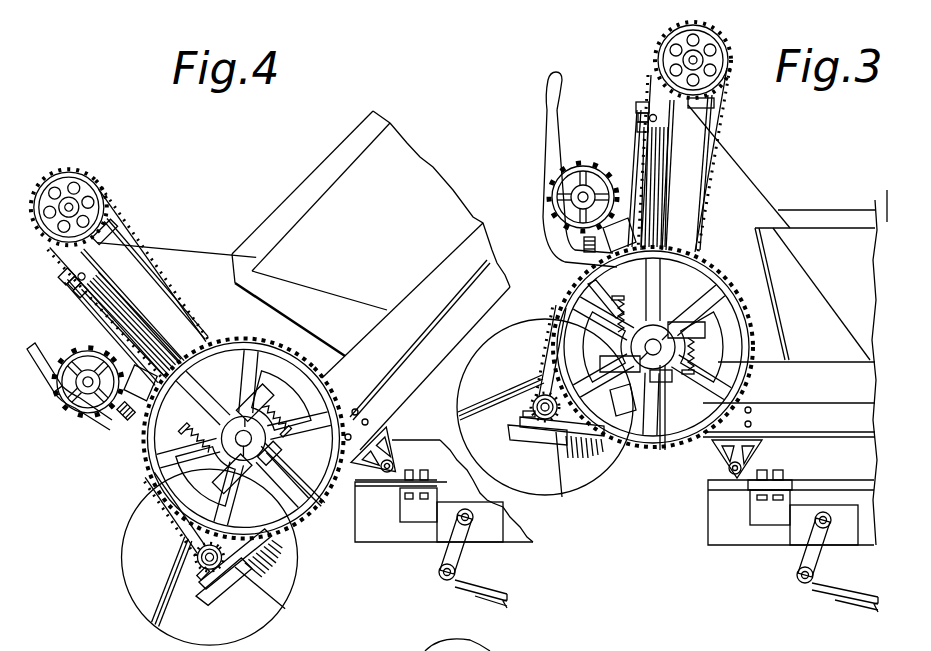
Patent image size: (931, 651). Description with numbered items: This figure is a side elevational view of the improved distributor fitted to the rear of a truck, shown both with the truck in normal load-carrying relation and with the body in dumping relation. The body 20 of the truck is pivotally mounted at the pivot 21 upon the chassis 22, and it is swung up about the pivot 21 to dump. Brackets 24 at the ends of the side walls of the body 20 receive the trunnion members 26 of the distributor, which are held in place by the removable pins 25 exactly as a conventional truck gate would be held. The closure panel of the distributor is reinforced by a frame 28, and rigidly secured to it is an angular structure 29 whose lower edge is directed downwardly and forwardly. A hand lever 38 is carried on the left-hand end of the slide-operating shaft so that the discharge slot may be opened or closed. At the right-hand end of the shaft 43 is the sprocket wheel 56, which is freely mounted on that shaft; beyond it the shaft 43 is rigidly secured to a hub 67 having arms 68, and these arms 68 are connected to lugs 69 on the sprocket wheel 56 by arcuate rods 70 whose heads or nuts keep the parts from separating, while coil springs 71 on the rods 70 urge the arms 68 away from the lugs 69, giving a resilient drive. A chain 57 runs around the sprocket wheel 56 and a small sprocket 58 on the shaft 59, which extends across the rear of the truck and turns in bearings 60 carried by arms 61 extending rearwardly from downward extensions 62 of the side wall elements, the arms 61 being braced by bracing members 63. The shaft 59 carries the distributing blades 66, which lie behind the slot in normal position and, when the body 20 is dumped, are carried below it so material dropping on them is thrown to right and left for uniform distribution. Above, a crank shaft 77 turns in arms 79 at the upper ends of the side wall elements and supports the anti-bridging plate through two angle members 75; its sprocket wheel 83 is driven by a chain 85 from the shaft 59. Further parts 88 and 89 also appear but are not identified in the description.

In FIG. 3, the body 20 is at (830, 210).
In FIG. 4, the body 20 is at (352, 172).
In FIG. 3, the pivot 21 is at (722, 460).
In FIG. 4, the pivot 21 is at (395, 460).
In FIG. 3, the chassis 22 is at (740, 545).
In FIG. 4, the chassis 22 is at (400, 545).
In FIG. 3, the bracket 24 is at (638, 116).
In FIG. 4, the bracket 24 is at (72, 292).
In FIG. 3, the removable pin 25 is at (640, 102).
In FIG. 4, the removable pin 25 is at (62, 268).
In FIG. 3, the trunnion member 26 is at (649, 118).
In FIG. 4, the trunnion member 26 is at (65, 281).
In FIG. 3, the frame 28 is at (636, 150).
In FIG. 4, the frame 28 is at (98, 325).
In FIG. 3, the angular structure 29 is at (596, 296).
In FIG. 3, the hand lever 38 is at (550, 124).
In FIG. 4, the hand lever 38 is at (44, 380).
In FIG. 3, the shaft 43 is at (695, 285).
In FIG. 4, the shaft 43 is at (285, 445).
In FIG. 3, the sprocket wheel 56 is at (748, 372).
In FIG. 4, the sprocket wheel 56 is at (238, 338).
In FIG. 3, the chain 57 is at (605, 470).
In FIG. 4, the chain 57 is at (290, 545).
In FIG. 3, the small sprocket 58 is at (540, 372).
In FIG. 4, the small sprocket 58 is at (175, 545).
In FIG. 3, the shaft 59 is at (532, 407).
In FIG. 4, the shaft 59 is at (192, 575).
In FIG. 3, the bearing 60 is at (520, 422).
In FIG. 4, the bearing 60 is at (200, 578).
In FIG. 3, the arm 61 is at (520, 440).
In FIG. 4, the arm 61 is at (212, 590).
In FIG. 3, the downward extension 62 is at (663, 445).
In FIG. 4, the downward extension 62 is at (270, 500).
In FIG. 3, the bracing member 63 is at (623, 400).
In FIG. 3, the distributing blade 66 is at (570, 494).
In FIG. 4, the distributing blade 66 is at (282, 603).
In FIG. 3, the hub 67 is at (665, 376).
In FIG. 4, the hub 67 is at (255, 455).
In FIG. 3, the arm 68 is at (714, 292).
In FIG. 4, the arm 68 is at (298, 362).
In FIG. 3, the lug 69 is at (586, 320).
In FIG. 4, the lug 69 is at (190, 448).
In FIG. 3, the arcuate rod 70 is at (612, 332).
In FIG. 4, the arcuate rod 70 is at (270, 400).
In FIG. 3, the coil spring 71 is at (600, 338).
In FIG. 4, the coil spring 71 is at (275, 410).
In FIG. 3, the angle member 75 is at (720, 120).
In FIG. 4, the angle member 75 is at (133, 215).
In FIG. 3, the shaft 77 is at (688, 58).
In FIG. 4, the shaft 77 is at (75, 205).
In FIG. 3, the arm 79 is at (684, 108).
In FIG. 4, the arm 79 is at (100, 245).
In FIG. 3, the sprocket wheel 83 is at (728, 40).
In FIG. 4, the sprocket wheel 83 is at (58, 175).
In FIG. 3, the chain 85 is at (663, 178).
In FIG. 4, the chain 85 is at (133, 315).
In FIG. 3, the sprocket 88 is at (552, 196).
In FIG. 4, the sprocket 88 is at (80, 425).
In FIG. 3, the bracket 89 is at (603, 240).
In FIG. 4, the bracket 89 is at (125, 440).